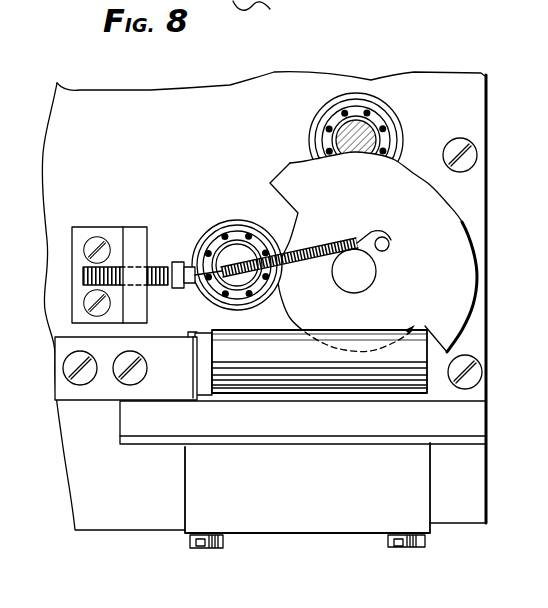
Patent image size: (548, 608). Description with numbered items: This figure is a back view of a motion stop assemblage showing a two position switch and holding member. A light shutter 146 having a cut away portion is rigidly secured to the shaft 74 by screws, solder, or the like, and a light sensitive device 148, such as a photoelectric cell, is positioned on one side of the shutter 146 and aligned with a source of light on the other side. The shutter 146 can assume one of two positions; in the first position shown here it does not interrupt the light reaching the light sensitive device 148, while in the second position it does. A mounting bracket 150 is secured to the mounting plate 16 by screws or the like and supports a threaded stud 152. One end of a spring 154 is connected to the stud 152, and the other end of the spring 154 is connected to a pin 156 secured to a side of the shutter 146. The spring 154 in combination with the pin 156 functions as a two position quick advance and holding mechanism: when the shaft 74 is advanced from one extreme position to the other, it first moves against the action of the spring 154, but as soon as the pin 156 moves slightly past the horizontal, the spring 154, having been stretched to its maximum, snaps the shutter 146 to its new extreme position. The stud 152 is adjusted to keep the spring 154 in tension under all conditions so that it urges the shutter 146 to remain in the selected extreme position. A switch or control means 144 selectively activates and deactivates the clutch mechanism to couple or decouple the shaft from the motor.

The mounting plate 16 is at (52, 152).
The light shutter 146 is at (289, 177).
The mounting bracket 150 is at (108, 232).
The threaded stud 152 is at (160, 262).
The spring 154 is at (291, 258).
The pin 156 is at (386, 235).
The shaft 74 is at (368, 278).
The switch 144 is at (241, 402).
The light sensitive device 148 is at (384, 393).